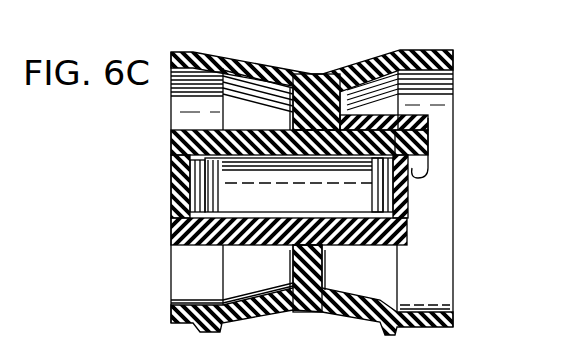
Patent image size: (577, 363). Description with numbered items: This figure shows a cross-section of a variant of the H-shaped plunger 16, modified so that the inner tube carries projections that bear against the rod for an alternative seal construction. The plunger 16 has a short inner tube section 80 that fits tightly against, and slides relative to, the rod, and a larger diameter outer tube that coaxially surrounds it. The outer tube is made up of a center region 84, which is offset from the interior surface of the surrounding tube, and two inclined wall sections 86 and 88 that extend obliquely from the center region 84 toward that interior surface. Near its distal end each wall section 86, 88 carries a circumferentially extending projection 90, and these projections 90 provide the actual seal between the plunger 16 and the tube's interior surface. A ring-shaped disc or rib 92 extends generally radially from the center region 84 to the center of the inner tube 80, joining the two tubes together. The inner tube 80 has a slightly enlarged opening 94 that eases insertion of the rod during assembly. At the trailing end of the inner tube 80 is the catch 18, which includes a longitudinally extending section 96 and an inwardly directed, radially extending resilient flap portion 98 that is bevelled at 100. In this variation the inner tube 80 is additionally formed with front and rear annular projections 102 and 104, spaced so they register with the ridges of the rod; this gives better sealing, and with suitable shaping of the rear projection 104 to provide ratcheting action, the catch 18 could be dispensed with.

The plunger 16 is at (460, 50).
The catch 18 is at (453, 115).
The inner tube section 80 is at (193, 246).
The center region 84 is at (311, 70).
The inclined wall section 86 is at (274, 60).
The inclined wall section 88 is at (363, 64).
The circumferentially extending projection 90 is at (216, 53).
The ring-shaped disc or rib 92 is at (322, 270).
The enlarged opening 94 is at (172, 158).
The longitudinally extending section 96 is at (415, 115).
The resilient flap portion 98 is at (430, 136).
The bevel 100 is at (414, 163).
The front annular projection 102 is at (200, 165).
The rear annular projection 104 is at (388, 193).